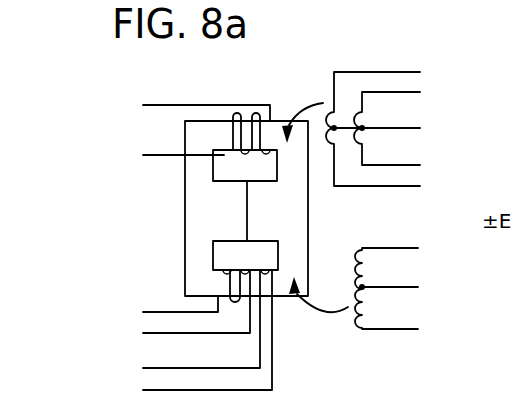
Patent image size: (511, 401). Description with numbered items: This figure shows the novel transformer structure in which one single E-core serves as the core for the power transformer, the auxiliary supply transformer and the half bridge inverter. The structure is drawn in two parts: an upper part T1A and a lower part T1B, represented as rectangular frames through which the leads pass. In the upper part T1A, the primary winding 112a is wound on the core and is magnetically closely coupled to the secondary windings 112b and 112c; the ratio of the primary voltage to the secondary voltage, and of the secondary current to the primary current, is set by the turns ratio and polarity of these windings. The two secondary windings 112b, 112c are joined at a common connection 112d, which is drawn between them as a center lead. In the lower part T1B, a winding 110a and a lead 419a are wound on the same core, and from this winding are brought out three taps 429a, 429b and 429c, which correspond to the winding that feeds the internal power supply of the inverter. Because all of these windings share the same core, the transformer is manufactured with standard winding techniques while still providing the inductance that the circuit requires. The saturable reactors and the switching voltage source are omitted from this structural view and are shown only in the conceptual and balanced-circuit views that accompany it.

The transformer structure T1A is at (203, 133).
The transformer structure T1B is at (200, 275).
The primary winding 112a is at (242, 160).
The winding 110a is at (225, 249).
The lead 419a is at (266, 249).
The secondary winding 112b is at (424, 70).
The secondary winding 112c is at (424, 189).
The winding tap 112d is at (418, 128).
The tap 429a is at (418, 248).
The tap 429b is at (418, 329).
The tap 429c is at (418, 287).